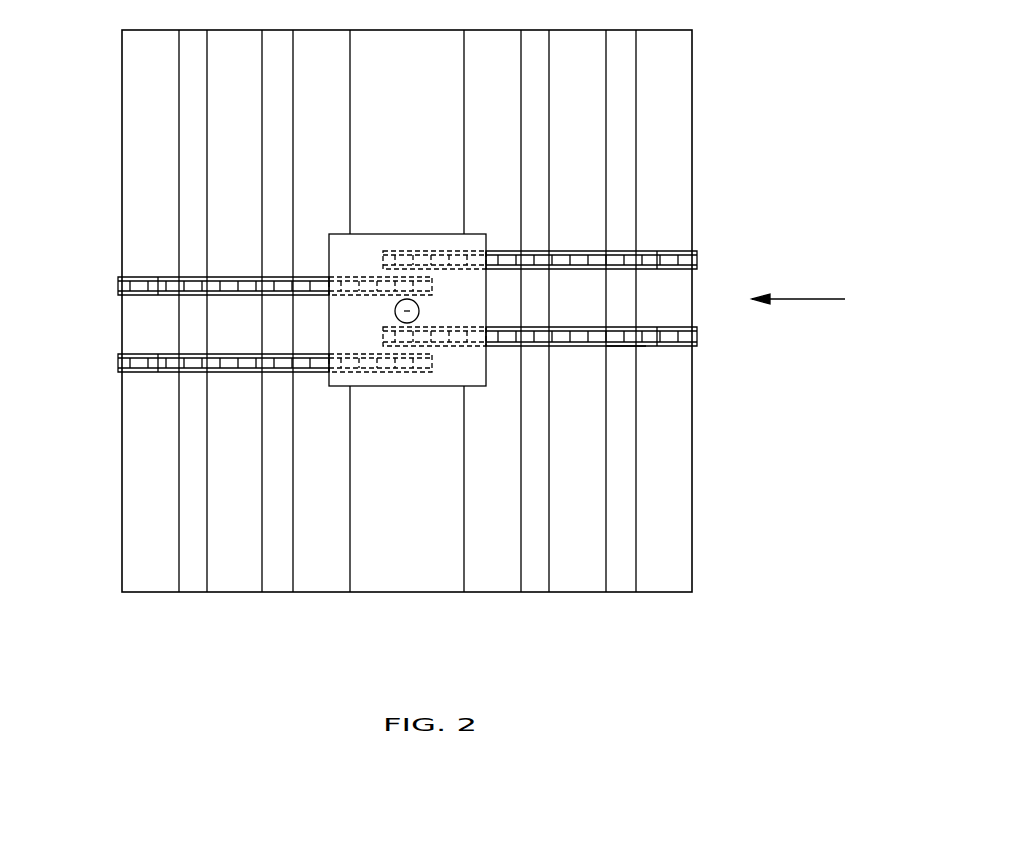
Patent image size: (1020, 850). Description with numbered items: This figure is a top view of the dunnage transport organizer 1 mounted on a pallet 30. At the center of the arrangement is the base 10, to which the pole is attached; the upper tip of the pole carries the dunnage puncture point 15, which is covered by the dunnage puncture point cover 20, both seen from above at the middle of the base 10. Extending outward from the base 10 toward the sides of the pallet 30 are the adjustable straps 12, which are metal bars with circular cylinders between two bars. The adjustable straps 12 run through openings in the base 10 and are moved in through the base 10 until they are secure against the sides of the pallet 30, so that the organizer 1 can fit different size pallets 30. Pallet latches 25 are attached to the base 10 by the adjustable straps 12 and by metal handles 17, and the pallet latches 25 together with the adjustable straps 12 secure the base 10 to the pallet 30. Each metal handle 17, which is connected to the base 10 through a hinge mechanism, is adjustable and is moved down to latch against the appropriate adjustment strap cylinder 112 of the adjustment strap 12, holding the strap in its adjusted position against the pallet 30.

The dunnage transport organizer 1 is at (807, 299).
The base 10 is at (329, 313).
The adjustable straps 12 is at (158, 277).
The dunnage puncture point 15 is at (407, 311).
The metal handles 17 is at (316, 283).
The dunnage puncture point cover 20 is at (395, 311).
The pallet latches 25 is at (117, 287).
The pallet 30 is at (121, 499).
The adjustment strap cylinder 112 is at (626, 346).